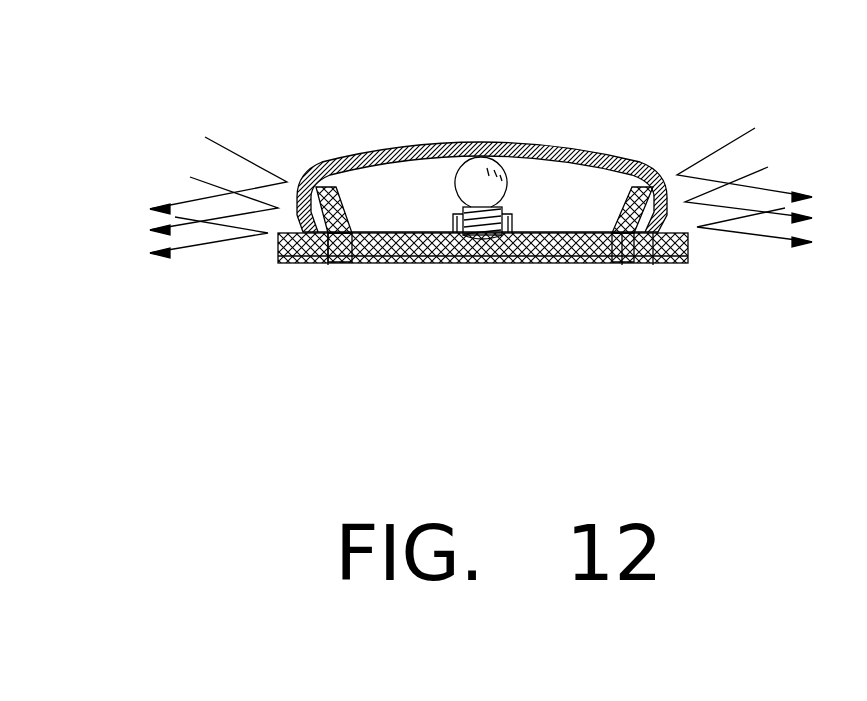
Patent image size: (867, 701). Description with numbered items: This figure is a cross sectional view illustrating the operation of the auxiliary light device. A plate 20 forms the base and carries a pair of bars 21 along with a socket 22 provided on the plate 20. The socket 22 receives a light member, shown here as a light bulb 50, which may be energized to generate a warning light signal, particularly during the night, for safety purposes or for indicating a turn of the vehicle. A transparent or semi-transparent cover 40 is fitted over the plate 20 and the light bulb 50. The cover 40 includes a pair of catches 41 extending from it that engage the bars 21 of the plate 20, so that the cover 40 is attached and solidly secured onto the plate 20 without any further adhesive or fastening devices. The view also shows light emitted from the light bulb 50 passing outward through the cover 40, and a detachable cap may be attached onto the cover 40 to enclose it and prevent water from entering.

The plate 20 is at (558, 237).
The bars 21 is at (328, 262).
The socket 22 is at (510, 220).
The cover 40 is at (535, 145).
The catches 41 is at (303, 210).
The light bulb 50 is at (473, 182).